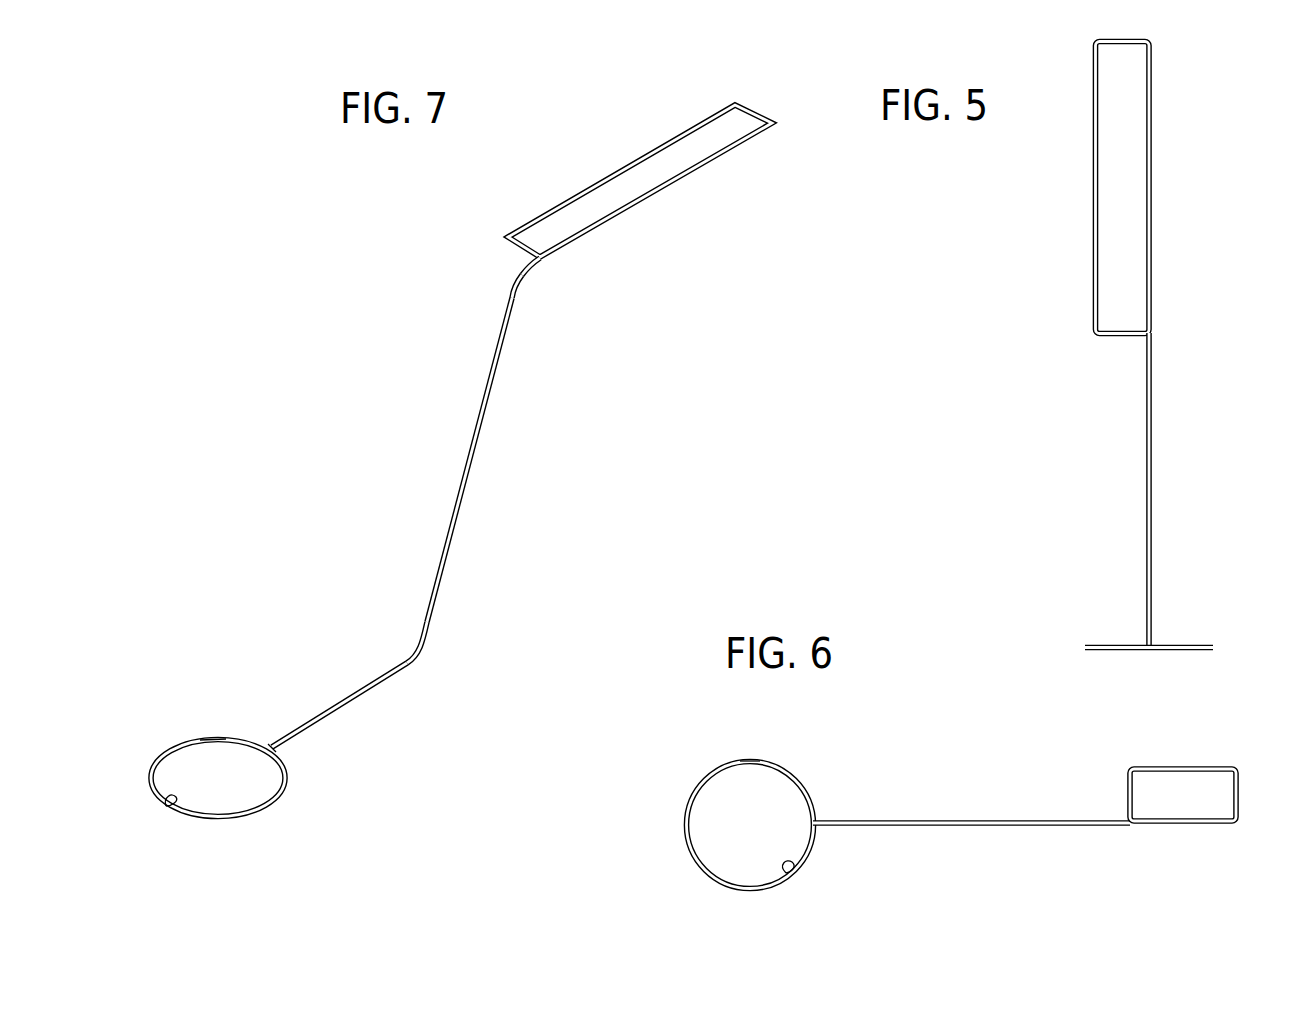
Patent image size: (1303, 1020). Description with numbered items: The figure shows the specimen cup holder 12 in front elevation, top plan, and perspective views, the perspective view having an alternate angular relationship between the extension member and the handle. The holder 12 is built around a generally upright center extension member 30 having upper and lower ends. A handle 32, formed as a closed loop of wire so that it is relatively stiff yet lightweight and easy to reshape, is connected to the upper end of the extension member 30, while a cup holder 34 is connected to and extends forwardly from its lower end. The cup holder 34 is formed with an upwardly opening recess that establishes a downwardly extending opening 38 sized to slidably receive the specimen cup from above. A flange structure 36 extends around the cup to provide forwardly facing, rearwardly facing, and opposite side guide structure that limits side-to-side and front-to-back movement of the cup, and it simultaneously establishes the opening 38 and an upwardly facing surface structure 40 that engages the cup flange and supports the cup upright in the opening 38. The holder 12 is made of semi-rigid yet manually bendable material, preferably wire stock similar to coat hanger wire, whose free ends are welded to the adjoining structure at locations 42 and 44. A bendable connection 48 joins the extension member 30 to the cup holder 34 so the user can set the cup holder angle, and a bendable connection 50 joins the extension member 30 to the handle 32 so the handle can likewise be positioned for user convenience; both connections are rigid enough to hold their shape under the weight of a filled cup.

In FIG. 7, the holder 12 is at (436, 472).
In FIG. 5, the holder 12 is at (1128, 345).
In FIG. 6, the holder 12 is at (920, 804).
In FIG. 7, the center extension member 30 is at (473, 472).
In FIG. 5, the center extension member 30 is at (1152, 462).
In FIG. 6, the center extension member 30 is at (978, 818).
In FIG. 7, the handle 32 is at (655, 197).
In FIG. 5, the handle 32 is at (1151, 150).
In FIG. 6, the handle 32 is at (1128, 797).
In FIG. 7, the cup holder 34 is at (322, 710).
In FIG. 6, the cup holder 34 is at (912, 818).
In FIG. 7, the flange structure 36 is at (287, 783).
In FIG. 5, the flange structure 36 is at (1085, 648).
In FIG. 6, the flange structure 36 is at (695, 862).
In FIG. 7, the opening 38 is at (207, 738).
In FIG. 6, the opening 38 is at (785, 880).
In FIG. 7, the upwardly facing surface structure 40 is at (167, 804).
In FIG. 6, the upwardly facing surface structure 40 is at (750, 760).
In FIG. 7, the weld location 42 is at (277, 750).
In FIG. 7, the weld location 44 is at (548, 261).
In FIG. 7, the bendable connection 48 is at (417, 661).
In FIG. 7, the bendable connection 50 is at (518, 293).